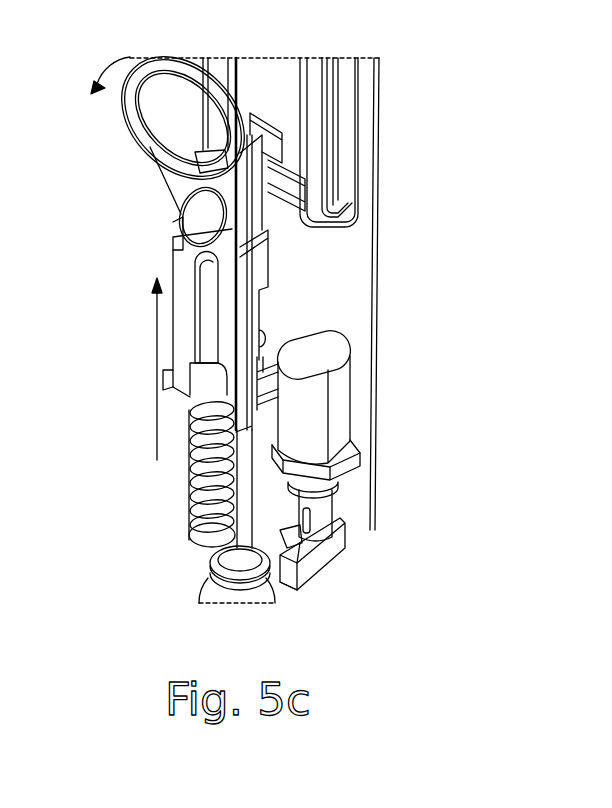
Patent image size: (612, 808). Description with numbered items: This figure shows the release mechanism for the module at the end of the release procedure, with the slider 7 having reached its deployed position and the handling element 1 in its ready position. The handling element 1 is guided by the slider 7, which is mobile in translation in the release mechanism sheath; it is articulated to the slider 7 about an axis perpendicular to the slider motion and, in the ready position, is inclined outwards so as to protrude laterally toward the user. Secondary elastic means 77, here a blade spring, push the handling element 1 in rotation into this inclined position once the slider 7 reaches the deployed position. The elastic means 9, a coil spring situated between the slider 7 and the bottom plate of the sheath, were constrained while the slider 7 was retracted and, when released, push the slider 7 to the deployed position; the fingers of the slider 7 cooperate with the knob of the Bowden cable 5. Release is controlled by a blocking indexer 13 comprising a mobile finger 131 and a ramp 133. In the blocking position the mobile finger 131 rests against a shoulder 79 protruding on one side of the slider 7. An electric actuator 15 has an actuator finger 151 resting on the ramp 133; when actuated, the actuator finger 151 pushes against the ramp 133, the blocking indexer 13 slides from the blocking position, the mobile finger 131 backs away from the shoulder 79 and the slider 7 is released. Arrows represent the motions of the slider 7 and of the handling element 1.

The handling element 1 is at (150, 147).
The slider 7 is at (173, 256).
The secondary elastic means 77 is at (250, 153).
The shoulder 79 is at (275, 412).
The electric actuator 15 is at (343, 399).
The actuator finger 151 is at (327, 503).
The ramp 133 is at (318, 534).
The blocking indexer 13 is at (327, 558).
The mobile finger 131 is at (300, 545).
The elastic means 9 is at (189, 490).
The Bowden cable 5 is at (203, 592).